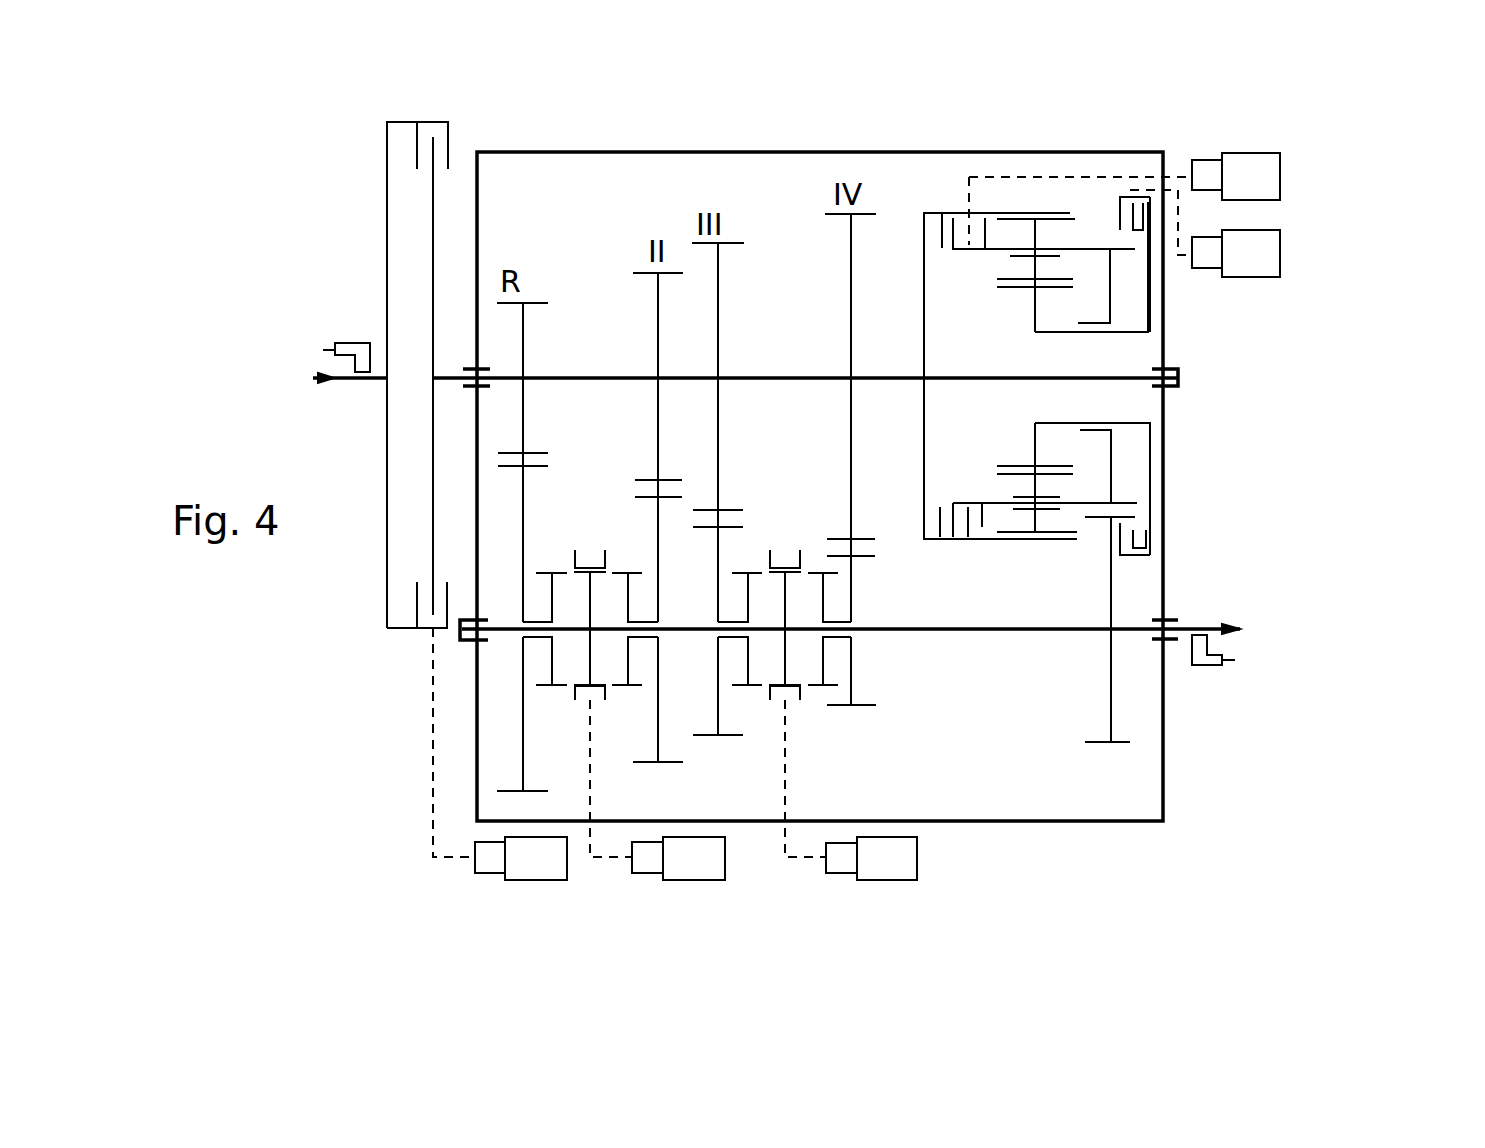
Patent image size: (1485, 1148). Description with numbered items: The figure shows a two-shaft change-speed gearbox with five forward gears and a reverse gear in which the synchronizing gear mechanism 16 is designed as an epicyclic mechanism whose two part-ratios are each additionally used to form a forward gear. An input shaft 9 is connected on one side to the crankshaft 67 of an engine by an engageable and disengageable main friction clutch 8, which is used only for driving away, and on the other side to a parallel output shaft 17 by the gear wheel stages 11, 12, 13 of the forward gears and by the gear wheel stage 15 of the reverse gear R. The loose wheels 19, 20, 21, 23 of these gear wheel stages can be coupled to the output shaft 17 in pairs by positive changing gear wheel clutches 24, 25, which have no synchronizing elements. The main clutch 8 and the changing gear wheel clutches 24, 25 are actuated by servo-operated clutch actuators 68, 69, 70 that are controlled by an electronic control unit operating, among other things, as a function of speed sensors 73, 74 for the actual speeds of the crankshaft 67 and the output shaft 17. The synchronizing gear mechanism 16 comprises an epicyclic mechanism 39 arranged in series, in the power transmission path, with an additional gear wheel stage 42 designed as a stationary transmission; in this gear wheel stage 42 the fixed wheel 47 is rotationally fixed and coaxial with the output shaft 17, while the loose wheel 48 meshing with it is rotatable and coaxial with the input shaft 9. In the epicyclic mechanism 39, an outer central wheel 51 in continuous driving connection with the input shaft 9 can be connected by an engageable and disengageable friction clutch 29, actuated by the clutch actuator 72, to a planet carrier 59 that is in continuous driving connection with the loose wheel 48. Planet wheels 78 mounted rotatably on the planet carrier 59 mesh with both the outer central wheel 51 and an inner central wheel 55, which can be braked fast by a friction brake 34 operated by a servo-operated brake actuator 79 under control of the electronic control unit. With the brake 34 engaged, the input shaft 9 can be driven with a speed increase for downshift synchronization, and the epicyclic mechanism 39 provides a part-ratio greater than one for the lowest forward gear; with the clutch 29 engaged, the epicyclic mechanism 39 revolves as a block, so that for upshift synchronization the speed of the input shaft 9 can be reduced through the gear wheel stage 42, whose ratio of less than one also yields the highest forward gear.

The main friction clutch 8 is at (405, 634).
The input shaft 9 is at (766, 377).
The gear wheel stage 11 is at (640, 270).
The gear wheel stage 12 is at (736, 240).
The gear wheel stage 13 is at (871, 205).
The gear wheel stage of reverse gear 15 is at (532, 300).
The synchronizing gear mechanism 16 is at (1045, 160).
The output shaft 17 is at (983, 634).
The loose wheel 19 is at (658, 718).
The loose wheel 20 is at (730, 710).
The loose wheel 21 is at (858, 678).
The loose wheel 23 is at (523, 712).
The changing gear wheel clutch 24 is at (589, 550).
The changing gear wheel clutch 25 is at (785, 548).
The friction clutch 29 is at (957, 500).
The friction brake 34 is at (1160, 533).
The epicyclic mechanism 39 is at (1013, 293).
The gear wheel stage 42 is at (1108, 747).
The fixed wheel 47 is at (1110, 680).
The loose wheel 48 is at (1120, 250).
The outer central wheel 51 is at (1003, 541).
The inner central wheel 55 is at (1032, 466).
The planet carrier 59 is at (997, 253).
The crankshaft 67 is at (345, 385).
The clutch actuator 68 is at (550, 882).
The clutch actuator 69 is at (677, 882).
The clutch actuator 70 is at (867, 882).
The clutch actuator 72 is at (1288, 167).
The speed sensor 73 is at (345, 340).
The speed sensor 74 is at (1204, 668).
The planet wheels 78 is at (1040, 487).
The brake actuator 79 is at (1288, 251).